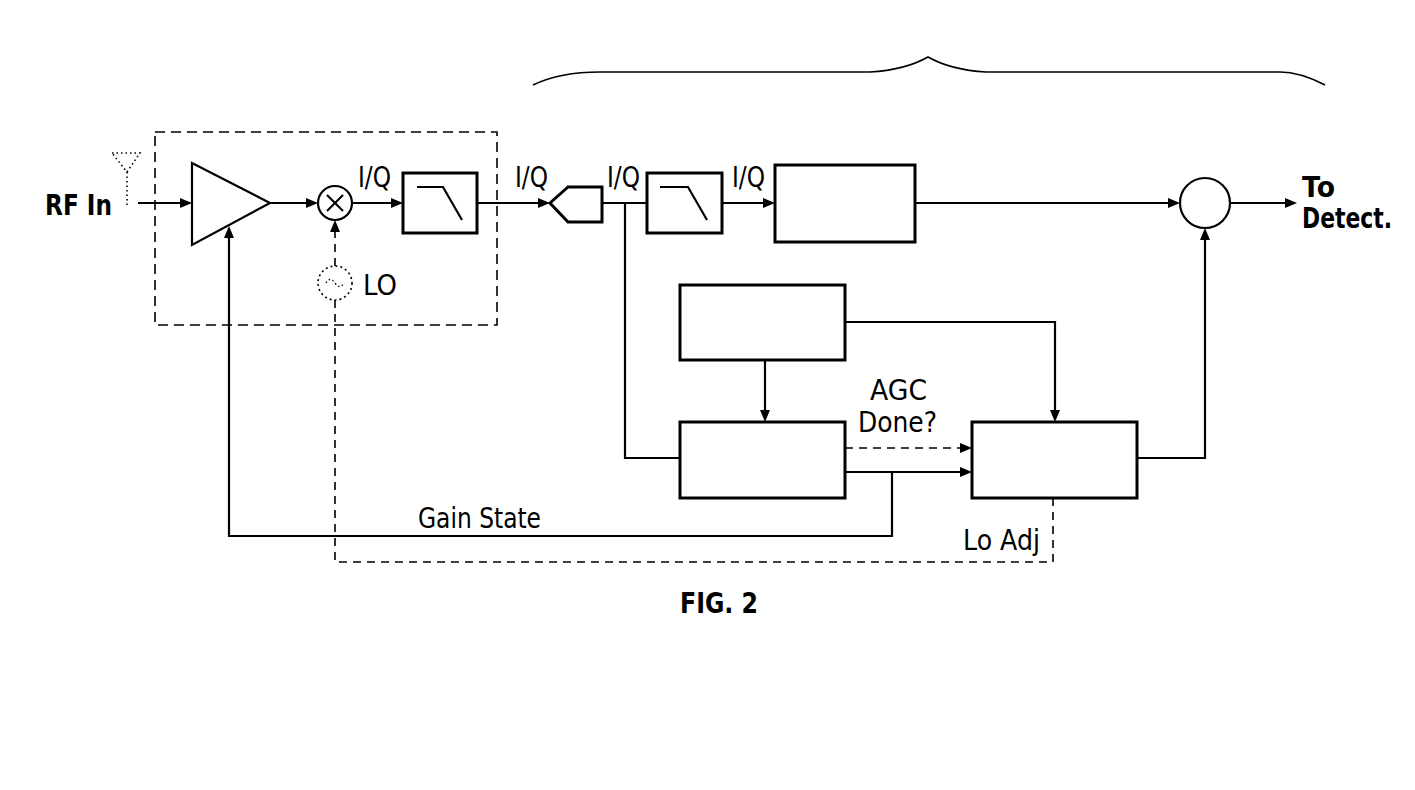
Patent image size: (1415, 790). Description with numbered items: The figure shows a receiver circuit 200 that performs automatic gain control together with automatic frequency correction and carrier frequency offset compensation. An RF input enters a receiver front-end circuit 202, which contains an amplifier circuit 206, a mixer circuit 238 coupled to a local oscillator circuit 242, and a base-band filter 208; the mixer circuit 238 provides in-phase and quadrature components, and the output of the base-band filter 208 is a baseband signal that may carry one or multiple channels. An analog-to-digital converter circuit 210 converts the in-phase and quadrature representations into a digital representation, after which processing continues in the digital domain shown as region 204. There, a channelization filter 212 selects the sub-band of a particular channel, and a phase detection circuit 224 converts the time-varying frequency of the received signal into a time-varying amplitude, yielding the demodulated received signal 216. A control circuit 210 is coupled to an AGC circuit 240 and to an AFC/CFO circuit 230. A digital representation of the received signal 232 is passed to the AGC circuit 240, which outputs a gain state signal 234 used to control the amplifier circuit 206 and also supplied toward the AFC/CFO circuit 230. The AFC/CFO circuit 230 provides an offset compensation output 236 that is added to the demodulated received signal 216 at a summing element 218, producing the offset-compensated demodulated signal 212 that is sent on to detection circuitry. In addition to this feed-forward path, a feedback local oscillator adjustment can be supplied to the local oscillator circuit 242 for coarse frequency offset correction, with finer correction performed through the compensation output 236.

The receiver circuit 200 is at (188, 63).
The receiver front-end circuit 202 is at (192, 130).
The region 204 is at (929, 57).
The amplifier circuit 206 is at (233, 183).
The base-band filter 208 is at (440, 172).
The analog-to-digital converter circuit / control circuit 210 is at (585, 187).
The channelization filter / offset-compensated demodulated signal 212 is at (683, 173).
The demodulated received signal 216 is at (1047, 203).
The summing element 218 is at (1205, 178).
The phase detection circuit 224 is at (845, 165).
The AFC/CFO circuit 230 is at (1095, 422).
The digital representation of the received signal 232 is at (652, 462).
The gain state signal 234 is at (940, 478).
The offset compensation output 236 is at (1160, 458).
The mixer circuit 238 is at (333, 186).
The AGC circuit 240 is at (745, 422).
The local oscillator circuit 242 is at (324, 268).